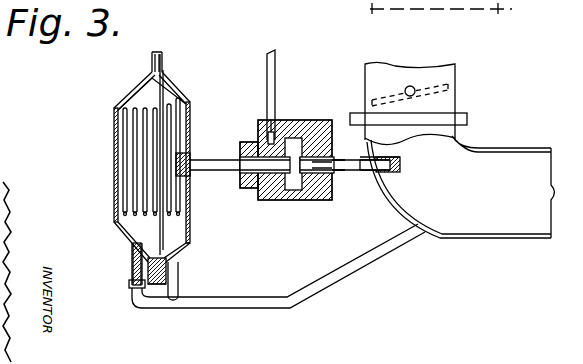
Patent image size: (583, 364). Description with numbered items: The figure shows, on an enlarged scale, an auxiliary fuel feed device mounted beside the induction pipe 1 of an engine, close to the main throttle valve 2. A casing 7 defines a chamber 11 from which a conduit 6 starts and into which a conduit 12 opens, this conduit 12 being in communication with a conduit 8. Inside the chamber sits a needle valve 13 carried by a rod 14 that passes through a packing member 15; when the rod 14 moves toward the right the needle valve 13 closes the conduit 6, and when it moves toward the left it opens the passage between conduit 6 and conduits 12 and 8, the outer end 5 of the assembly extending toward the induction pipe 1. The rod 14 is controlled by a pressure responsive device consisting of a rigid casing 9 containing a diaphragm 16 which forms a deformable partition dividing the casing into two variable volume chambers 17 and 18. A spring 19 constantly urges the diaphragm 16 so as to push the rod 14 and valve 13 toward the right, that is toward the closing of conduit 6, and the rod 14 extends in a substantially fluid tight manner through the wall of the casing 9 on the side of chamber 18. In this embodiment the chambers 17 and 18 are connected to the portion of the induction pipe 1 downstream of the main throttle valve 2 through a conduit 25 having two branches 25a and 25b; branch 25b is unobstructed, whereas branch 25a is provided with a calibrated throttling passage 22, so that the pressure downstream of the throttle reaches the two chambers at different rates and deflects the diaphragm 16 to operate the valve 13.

The induction pipe 1 is at (503, 158).
The main throttle valve 2 is at (430, 90).
The valve stem end 5 is at (400, 166).
The conduit 6 is at (342, 170).
The casing 7 is at (324, 190).
The conduit 8 is at (276, 62).
The rigid casing 9 is at (123, 164).
The chamber 11 is at (300, 134).
The conduit 12 is at (264, 192).
The needle valve 13 is at (296, 190).
The rod 14 is at (228, 170).
The packing member 15 is at (252, 142).
The diaphragm 16 is at (172, 88).
The chamber 17 is at (136, 98).
The chamber 18 is at (190, 245).
The spring 19 is at (128, 208).
The calibrated throttling passage 22 is at (130, 286).
The conduit 25 is at (270, 300).
The branch 25a is at (133, 258).
The branch 25b is at (180, 280).